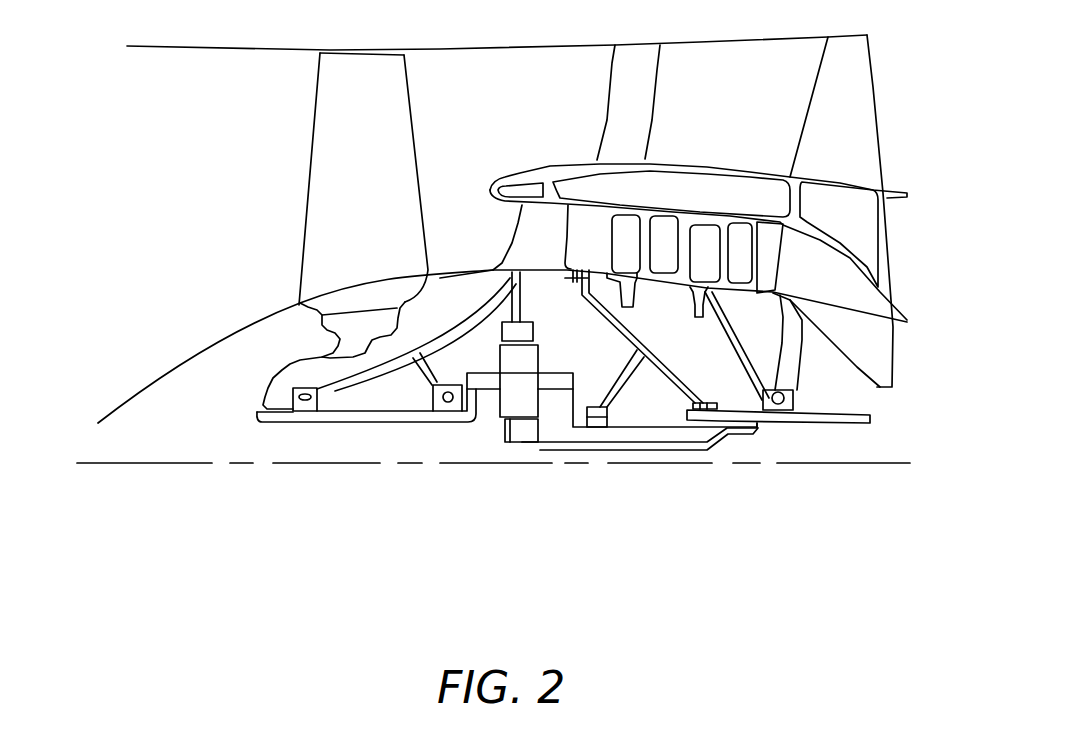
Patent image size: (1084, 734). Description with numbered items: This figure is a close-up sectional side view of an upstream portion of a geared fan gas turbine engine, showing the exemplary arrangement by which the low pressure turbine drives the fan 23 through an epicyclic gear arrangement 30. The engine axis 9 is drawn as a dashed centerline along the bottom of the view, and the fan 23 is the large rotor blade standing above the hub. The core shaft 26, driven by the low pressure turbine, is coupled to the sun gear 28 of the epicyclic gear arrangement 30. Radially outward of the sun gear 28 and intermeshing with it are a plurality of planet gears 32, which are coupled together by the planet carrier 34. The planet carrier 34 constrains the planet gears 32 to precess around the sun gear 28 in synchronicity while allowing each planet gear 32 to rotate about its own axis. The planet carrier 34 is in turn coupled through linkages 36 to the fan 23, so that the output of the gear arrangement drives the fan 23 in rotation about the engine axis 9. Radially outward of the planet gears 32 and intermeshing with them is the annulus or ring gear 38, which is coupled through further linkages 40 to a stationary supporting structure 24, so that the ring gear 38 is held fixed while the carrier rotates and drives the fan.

The engine axis 9 is at (193, 464).
The fan 23 is at (337, 180).
The stationary supporting structure 24 is at (523, 231).
The core shaft 26 is at (768, 424).
The sun gear 28 is at (523, 428).
The epicyclic gear arrangement 30 is at (486, 418).
The planet gears 32 is at (511, 402).
The planet carrier 34 is at (568, 400).
The linkages 36 is at (478, 416).
The ring gear 38 is at (533, 333).
The linkages 40 is at (525, 302).